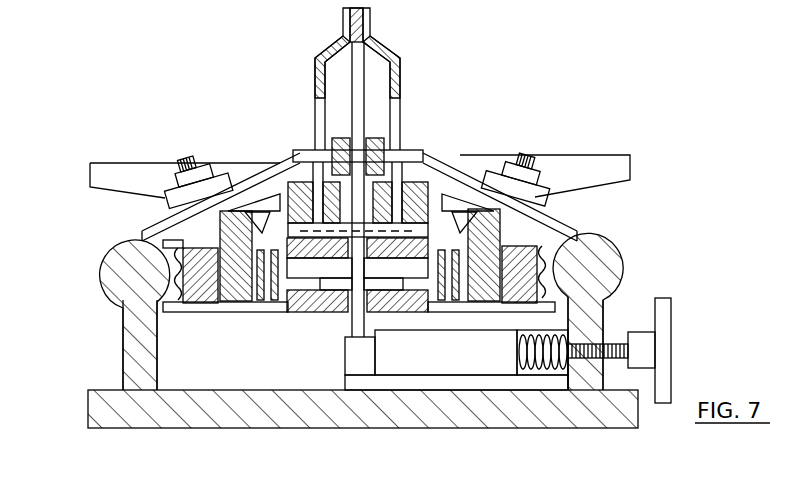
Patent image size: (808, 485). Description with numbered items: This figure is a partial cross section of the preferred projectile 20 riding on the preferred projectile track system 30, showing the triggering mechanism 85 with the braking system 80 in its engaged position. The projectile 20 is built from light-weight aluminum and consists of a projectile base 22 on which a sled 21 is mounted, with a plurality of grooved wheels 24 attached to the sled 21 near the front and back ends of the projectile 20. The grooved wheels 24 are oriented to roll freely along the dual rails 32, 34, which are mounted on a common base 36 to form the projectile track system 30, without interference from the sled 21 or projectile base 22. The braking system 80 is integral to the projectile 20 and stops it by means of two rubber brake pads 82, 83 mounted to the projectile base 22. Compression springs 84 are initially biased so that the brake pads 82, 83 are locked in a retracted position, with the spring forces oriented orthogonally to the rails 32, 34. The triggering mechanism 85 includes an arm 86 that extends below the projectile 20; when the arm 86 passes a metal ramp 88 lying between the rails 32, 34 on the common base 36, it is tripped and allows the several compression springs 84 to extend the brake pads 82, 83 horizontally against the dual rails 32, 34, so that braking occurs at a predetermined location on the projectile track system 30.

The projectile 20 is at (426, 98).
The sled 21 is at (430, 158).
The projectile base 22 is at (313, 312).
The grooved wheels 24 is at (155, 237).
The projectile track system 30 is at (632, 242).
The rail 32 is at (120, 287).
The rail 34 is at (603, 272).
The common base 36 is at (228, 0).
The braking system 80 is at (138, 344).
The brake pad 82 is at (175, 248).
The brake pad 83 is at (547, 252).
The compression springs 84 is at (270, 300).
The triggering mechanism 85 is at (356, 357).
The arm 86 is at (268, 178).
The metal ramp 88 is at (352, 344).